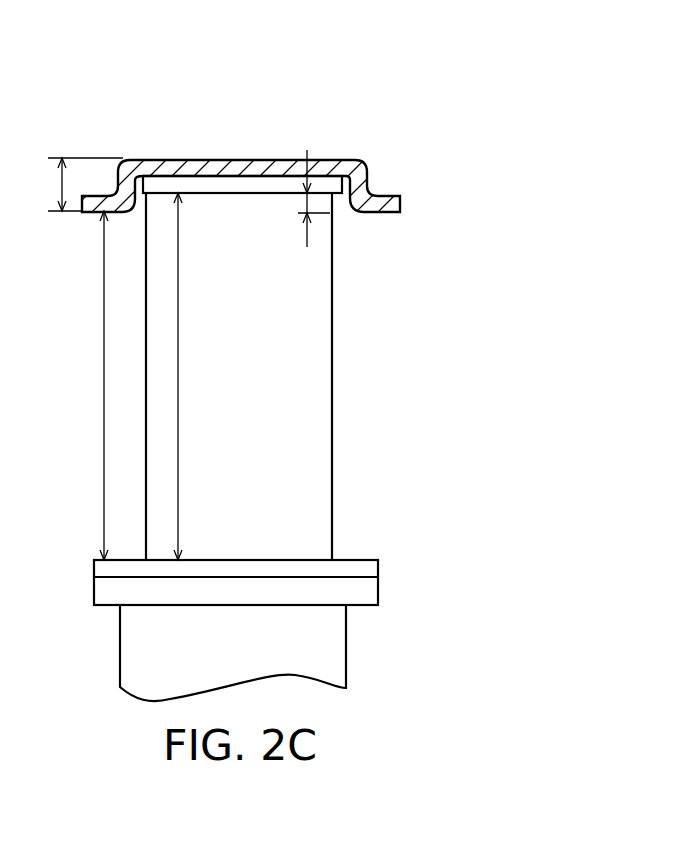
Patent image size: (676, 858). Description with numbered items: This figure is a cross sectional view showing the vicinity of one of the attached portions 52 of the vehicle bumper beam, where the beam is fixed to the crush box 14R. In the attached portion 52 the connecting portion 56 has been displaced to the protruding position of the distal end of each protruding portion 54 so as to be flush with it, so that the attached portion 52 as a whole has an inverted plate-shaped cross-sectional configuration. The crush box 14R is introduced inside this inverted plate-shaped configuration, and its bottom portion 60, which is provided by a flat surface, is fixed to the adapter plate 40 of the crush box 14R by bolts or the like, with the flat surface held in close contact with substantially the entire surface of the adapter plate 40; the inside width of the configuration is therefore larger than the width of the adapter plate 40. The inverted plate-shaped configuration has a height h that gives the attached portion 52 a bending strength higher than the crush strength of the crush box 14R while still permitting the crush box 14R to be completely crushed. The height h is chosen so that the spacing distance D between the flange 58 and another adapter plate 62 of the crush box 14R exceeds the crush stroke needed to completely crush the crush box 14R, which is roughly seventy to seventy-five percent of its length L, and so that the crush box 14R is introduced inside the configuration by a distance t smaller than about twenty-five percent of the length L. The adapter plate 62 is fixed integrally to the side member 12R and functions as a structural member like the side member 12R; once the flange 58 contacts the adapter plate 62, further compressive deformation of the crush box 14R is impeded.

The attached portion 52 is at (381, 104).
The bottom portion 60 is at (242, 193).
The protruding portion 54 is at (242, 193).
The connecting portion 56 is at (233, 167).
The flange 58 is at (92, 203).
The adapter plate 40 is at (184, 183).
The crush box 14R is at (322, 420).
The adapter plate 62 is at (355, 570).
The side member 12R is at (333, 652).